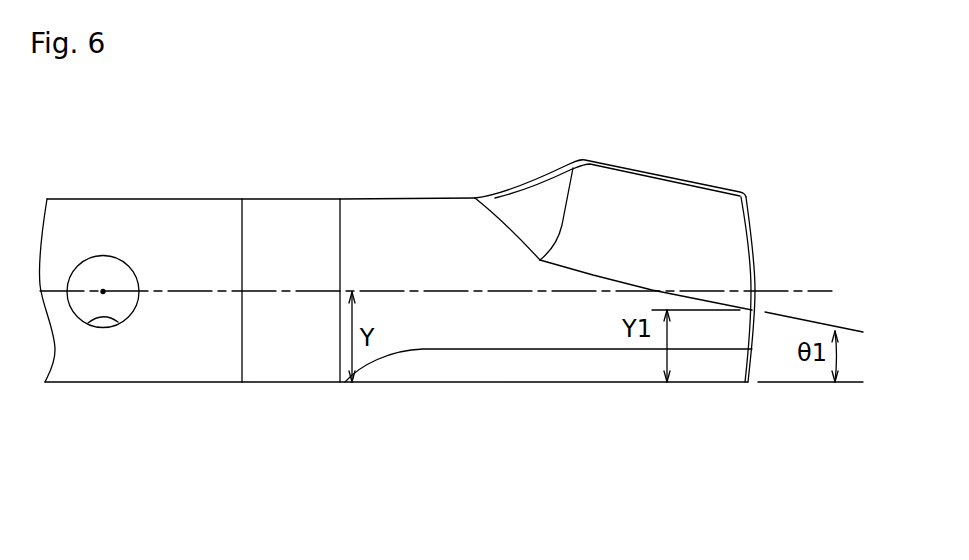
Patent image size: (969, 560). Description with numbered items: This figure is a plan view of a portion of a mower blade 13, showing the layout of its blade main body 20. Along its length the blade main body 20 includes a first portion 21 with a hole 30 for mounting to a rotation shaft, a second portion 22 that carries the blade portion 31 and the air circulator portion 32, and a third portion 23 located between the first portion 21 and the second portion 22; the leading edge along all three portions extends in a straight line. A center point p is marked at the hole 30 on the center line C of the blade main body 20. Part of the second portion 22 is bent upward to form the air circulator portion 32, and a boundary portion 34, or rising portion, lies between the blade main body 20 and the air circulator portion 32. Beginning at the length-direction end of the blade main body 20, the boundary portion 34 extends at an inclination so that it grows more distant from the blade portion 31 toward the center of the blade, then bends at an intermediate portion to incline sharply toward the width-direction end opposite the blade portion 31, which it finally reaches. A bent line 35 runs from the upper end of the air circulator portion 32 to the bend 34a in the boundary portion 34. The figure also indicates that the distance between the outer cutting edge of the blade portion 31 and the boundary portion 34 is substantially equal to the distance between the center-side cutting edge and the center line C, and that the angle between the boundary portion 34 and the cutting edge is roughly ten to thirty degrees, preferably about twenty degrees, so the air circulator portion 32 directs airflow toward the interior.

The mower blade 13 is at (393, 341).
The blade main body 20 is at (188, 383).
The first portion 21 is at (197, 218).
The second portion 22 is at (408, 233).
The third portion 23 is at (298, 227).
The hole 30 is at (120, 320).
The blade portion 31 is at (572, 370).
The air circulator portion 32 is at (715, 207).
The boundary portion 34 is at (593, 275).
The bend 34a is at (538, 262).
The bent line 35 is at (567, 188).
The center point p is at (103, 292).
The center line C is at (446, 291).